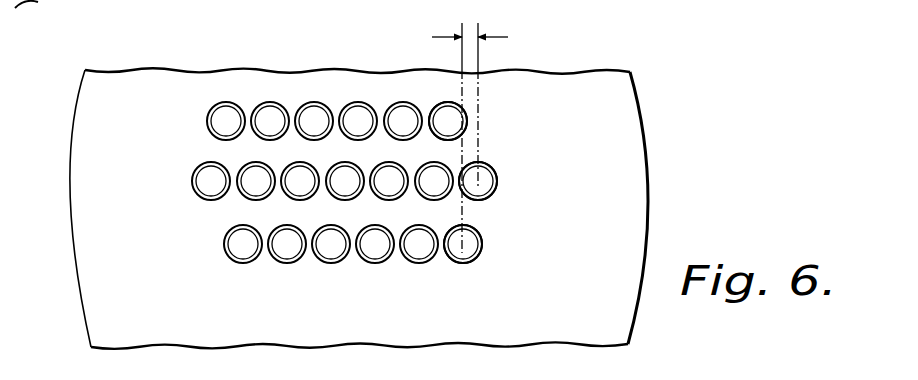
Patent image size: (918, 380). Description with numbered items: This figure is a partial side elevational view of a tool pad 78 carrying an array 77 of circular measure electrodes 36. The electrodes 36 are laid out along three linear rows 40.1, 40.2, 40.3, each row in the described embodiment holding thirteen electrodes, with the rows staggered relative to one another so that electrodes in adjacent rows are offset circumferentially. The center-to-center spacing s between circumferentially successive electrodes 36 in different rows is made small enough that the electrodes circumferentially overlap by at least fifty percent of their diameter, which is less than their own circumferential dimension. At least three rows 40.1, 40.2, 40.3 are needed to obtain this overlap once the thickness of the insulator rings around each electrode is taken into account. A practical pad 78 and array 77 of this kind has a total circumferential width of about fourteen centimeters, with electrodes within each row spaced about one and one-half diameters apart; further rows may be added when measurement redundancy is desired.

The array 77 is at (346, 84).
The pad 78 is at (72, 248).
The measure electrodes 36 is at (447, 110).
The first row 40.1 is at (197, 123).
The second row 40.2 is at (190, 196).
The third row 40.3 is at (220, 265).
The spacing s is at (470, 37).